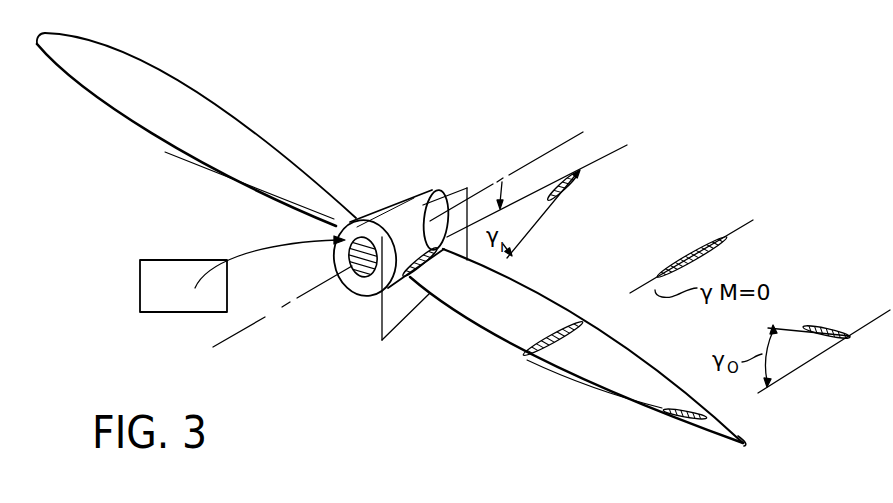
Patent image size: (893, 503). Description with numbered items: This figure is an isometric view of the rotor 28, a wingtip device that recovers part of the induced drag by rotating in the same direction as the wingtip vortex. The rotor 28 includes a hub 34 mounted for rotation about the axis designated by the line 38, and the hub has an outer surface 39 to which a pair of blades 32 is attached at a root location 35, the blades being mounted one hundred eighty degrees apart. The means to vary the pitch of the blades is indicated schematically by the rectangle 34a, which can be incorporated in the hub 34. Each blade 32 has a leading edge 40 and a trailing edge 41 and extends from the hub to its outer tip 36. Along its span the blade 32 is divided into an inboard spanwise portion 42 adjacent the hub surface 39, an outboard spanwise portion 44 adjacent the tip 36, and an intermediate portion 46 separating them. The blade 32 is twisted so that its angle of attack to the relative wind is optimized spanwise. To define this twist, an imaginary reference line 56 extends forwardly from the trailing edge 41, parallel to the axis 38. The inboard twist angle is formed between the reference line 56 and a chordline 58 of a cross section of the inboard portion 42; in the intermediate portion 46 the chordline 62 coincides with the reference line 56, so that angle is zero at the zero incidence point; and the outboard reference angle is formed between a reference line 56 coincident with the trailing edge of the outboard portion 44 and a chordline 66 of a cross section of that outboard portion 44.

The rotor 28 is at (360, 205).
The blade 32 is at (187, 95).
The hub 34 is at (395, 196).
The pitch varying means 34a is at (153, 306).
The root location 35 is at (430, 200).
The outer tip 36 is at (745, 445).
The axis of rotation 38 is at (250, 328).
The hub outer surface 39 is at (372, 300).
The leading edge 40 is at (505, 344).
The trailing edge 41 is at (562, 312).
The inboard spanwise portion 42 is at (432, 306).
The outboard spanwise portion 44 is at (687, 428).
The intermediate portion 46 is at (563, 362).
The reference line 56 is at (612, 153).
The chordline of inboard blade portion 58 is at (530, 225).
The chordline of intermediate portion 62 is at (654, 289).
The chordline of outboard blade portion 66 is at (777, 328).